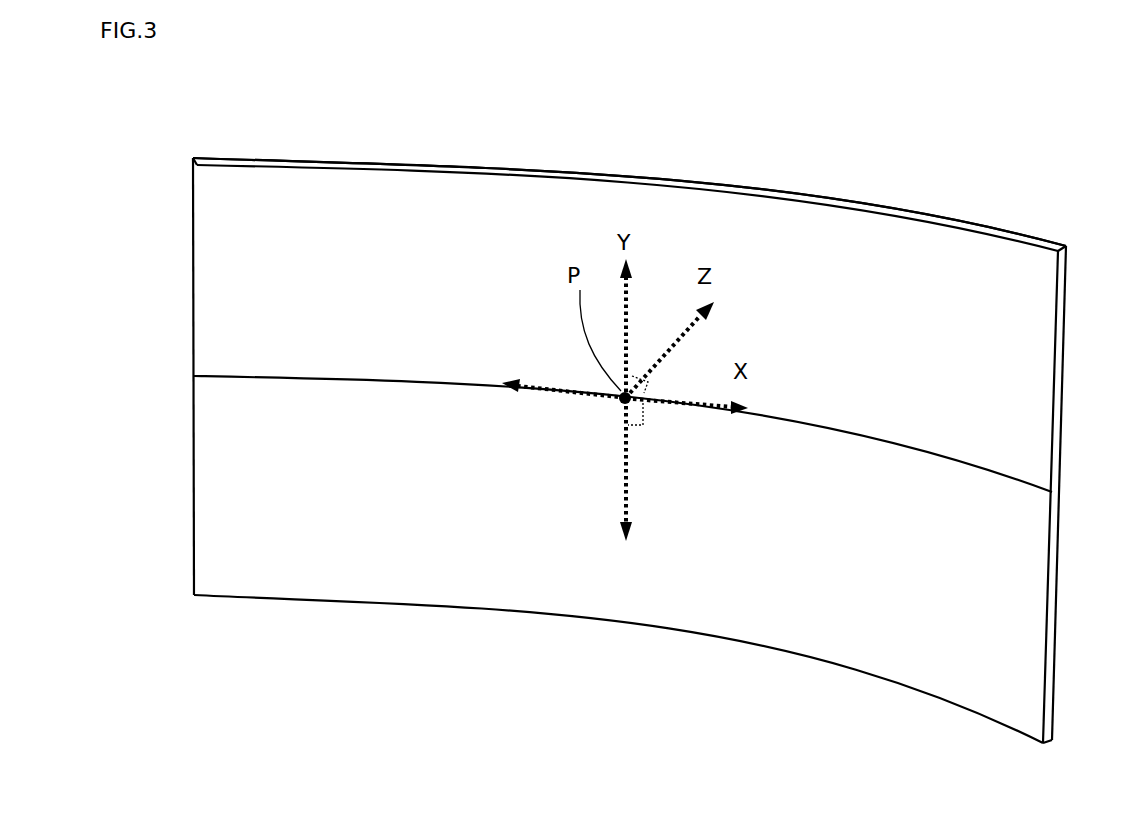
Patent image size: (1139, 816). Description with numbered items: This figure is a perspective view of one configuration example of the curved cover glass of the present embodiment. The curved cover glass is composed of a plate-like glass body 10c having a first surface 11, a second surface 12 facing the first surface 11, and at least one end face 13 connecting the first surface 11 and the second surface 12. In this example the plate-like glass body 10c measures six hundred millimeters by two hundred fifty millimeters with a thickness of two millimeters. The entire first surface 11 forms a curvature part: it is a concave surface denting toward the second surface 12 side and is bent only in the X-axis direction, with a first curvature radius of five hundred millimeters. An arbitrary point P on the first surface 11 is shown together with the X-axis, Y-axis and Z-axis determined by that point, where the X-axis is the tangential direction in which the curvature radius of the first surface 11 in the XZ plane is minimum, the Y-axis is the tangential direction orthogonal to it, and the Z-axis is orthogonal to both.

The plate-like glass body 10c is at (791, 146).
The first surface 11 is at (898, 647).
The second surface 12 is at (912, 264).
The end face 13 is at (1065, 302).